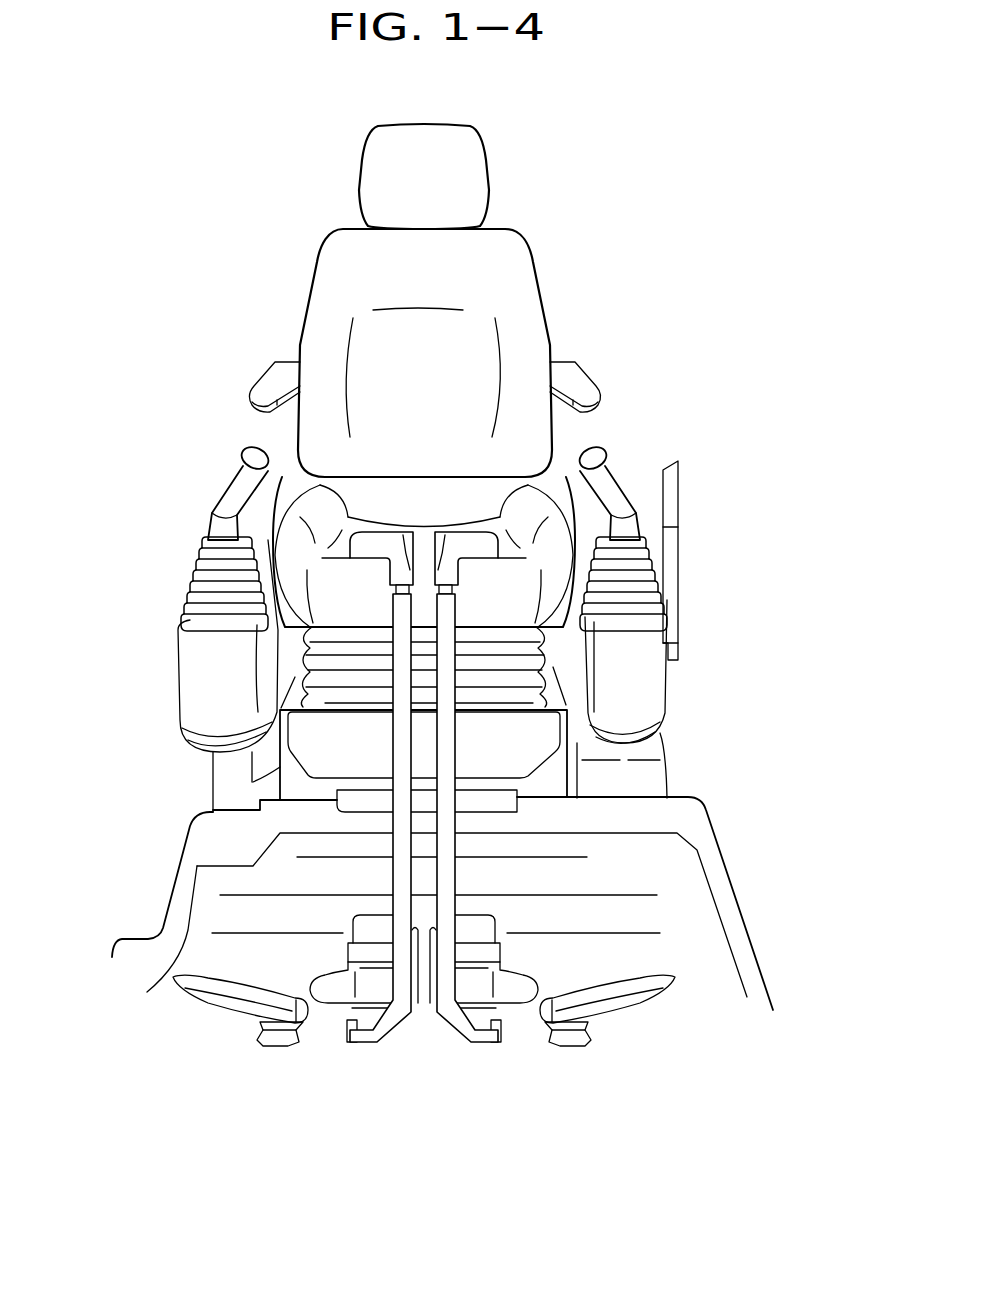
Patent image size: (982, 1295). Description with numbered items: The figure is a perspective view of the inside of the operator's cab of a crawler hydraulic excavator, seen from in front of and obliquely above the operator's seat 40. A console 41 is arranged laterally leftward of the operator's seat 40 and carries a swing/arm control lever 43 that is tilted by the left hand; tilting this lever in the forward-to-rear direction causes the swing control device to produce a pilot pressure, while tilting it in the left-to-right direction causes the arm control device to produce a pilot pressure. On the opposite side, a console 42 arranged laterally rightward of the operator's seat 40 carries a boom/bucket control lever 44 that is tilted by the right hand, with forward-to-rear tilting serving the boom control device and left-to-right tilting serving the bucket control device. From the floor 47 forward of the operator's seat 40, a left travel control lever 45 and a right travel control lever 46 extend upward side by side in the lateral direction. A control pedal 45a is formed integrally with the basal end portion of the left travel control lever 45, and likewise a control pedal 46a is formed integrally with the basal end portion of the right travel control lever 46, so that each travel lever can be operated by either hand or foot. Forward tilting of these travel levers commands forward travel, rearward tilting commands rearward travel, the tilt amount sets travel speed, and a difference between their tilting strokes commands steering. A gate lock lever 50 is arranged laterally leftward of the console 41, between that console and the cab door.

The operator's seat 40 is at (330, 240).
The console 41 is at (620, 693).
The console 42 is at (205, 690).
The swing/arm control lever 43 is at (612, 462).
The boom/bucket control lever 44 is at (228, 483).
The left travel control lever 45 is at (455, 882).
The control pedal 45a is at (518, 993).
The right travel control lever 46 is at (393, 890).
The control pedal 46a is at (340, 995).
The floor 47 is at (708, 947).
The gate lock lever 50 is at (678, 492).